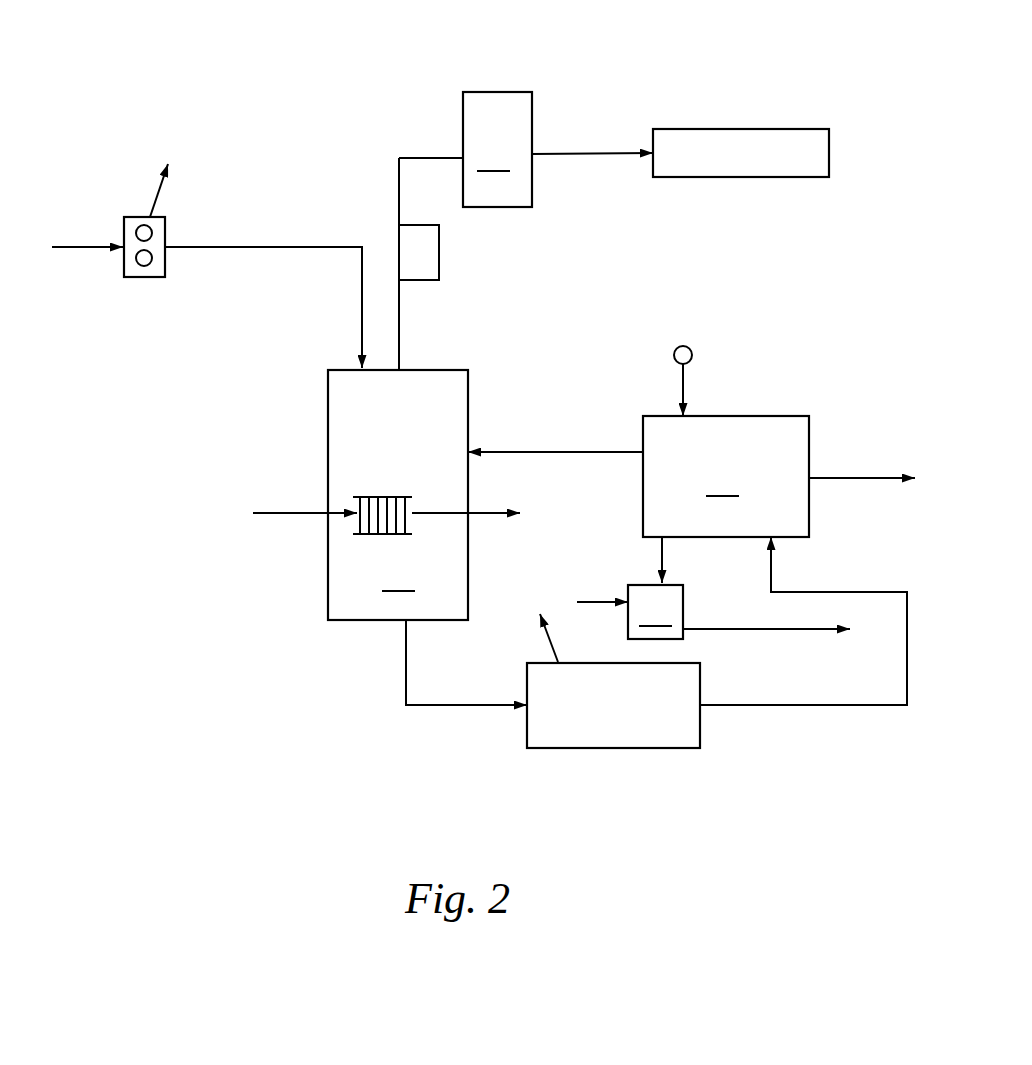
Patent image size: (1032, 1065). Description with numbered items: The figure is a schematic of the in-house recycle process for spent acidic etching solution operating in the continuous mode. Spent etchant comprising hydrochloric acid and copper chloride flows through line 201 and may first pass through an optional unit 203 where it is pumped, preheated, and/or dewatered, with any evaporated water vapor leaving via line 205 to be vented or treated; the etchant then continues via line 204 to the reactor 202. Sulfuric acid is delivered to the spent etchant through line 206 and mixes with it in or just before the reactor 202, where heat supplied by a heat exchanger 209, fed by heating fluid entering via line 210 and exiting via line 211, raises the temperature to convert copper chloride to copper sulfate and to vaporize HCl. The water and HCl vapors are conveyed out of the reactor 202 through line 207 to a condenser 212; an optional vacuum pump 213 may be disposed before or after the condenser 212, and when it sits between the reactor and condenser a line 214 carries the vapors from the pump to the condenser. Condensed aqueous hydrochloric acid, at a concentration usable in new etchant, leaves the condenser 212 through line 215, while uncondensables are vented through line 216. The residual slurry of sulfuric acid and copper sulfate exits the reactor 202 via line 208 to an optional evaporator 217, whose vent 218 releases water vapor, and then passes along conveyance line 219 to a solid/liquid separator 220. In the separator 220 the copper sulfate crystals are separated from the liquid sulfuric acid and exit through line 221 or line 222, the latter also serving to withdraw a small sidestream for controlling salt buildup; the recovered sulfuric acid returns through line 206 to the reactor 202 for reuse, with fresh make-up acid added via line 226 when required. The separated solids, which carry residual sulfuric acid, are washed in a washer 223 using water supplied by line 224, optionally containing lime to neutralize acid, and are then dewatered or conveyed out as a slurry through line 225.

The line 201 is at (88, 245).
The reactor 202 is at (398, 495).
The unit 203 is at (137, 278).
The line 204 is at (275, 246).
The line 205 is at (170, 174).
The line 206 is at (590, 452).
The line 207 is at (400, 326).
The line 208 is at (450, 707).
The heat exchanger 209 is at (373, 497).
The line 210 is at (284, 512).
The line 211 is at (490, 513).
The condenser 212 is at (506, 92).
The vacuum pump 213 is at (440, 250).
The line 214 is at (400, 202).
The line 215 is at (583, 157).
The line 216 is at (497, 106).
The evaporator 217 is at (600, 750).
The vent 218 is at (540, 620).
The conveyance line 219 is at (828, 708).
The solid/liquid separator 220 is at (726, 476).
The line 221 is at (662, 553).
The line 222 is at (865, 478).
The washer 223 is at (655, 612).
The line 224 is at (600, 600).
The line 225 is at (775, 631).
The line 226 is at (683, 385).